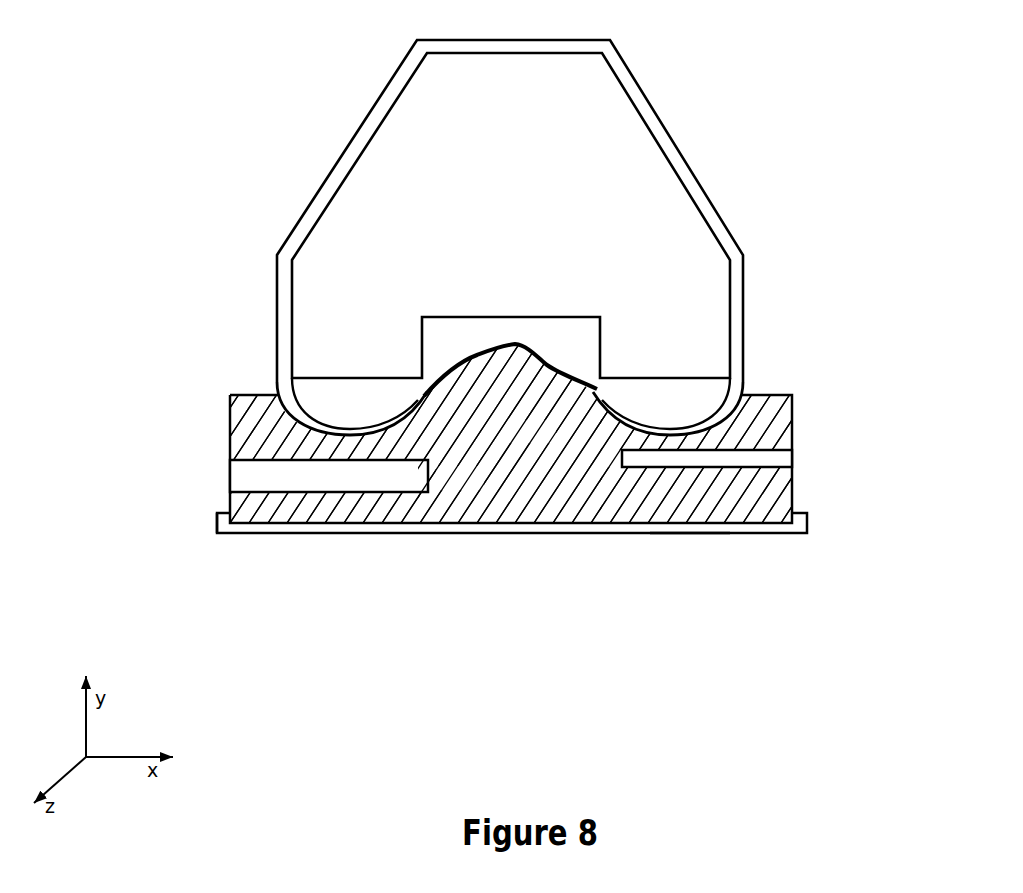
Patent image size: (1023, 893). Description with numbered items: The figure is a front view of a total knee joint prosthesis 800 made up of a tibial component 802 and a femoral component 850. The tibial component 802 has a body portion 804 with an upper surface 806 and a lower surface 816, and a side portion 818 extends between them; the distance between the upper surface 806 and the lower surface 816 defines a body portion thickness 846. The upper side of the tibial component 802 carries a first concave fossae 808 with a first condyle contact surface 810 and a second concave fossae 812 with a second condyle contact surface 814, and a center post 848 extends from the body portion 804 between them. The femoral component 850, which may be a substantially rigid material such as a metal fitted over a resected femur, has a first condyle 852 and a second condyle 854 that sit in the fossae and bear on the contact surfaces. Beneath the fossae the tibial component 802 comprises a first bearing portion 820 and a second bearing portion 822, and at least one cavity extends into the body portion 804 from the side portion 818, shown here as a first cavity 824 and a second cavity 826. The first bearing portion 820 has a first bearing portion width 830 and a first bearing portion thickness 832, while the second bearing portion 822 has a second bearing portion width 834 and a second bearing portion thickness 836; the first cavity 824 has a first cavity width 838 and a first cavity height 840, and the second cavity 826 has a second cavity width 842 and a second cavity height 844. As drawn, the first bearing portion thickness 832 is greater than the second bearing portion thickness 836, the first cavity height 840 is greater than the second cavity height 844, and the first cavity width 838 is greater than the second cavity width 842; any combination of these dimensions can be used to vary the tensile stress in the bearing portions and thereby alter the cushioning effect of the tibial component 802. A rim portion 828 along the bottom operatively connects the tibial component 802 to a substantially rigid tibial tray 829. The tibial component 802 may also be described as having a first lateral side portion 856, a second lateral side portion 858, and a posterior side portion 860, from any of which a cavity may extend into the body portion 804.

The total knee joint prosthesis 800 is at (797, 111).
The tibial component 802 is at (795, 366).
The body portion 804 is at (480, 382).
The upper surface 806 is at (245, 395).
The first concave fossae 808 is at (265, 365).
The first condyle contact surface 810 is at (385, 428).
The second concave fossae 812 is at (752, 372).
The second condyle contact surface 814 is at (663, 430).
The lower surface 816 is at (783, 534).
The side portion 818 is at (795, 405).
The first bearing portion 820 is at (340, 447).
The second bearing portion 822 is at (693, 440).
The first cavity 824 is at (283, 478).
The second cavity 826 is at (640, 463).
The rim portion 828 is at (217, 516).
The tibial tray 829 is at (690, 528).
The first bearing portion width 830 is at (419, 682).
The first bearing portion thickness 832 is at (217, 460).
The second bearing portion width 834 is at (747, 677).
The second bearing portion thickness 836 is at (868, 413).
The first cavity width 838 is at (427, 750).
The first cavity height 840 is at (458, 438).
The second cavity width 842 is at (792, 750).
The second cavity height 844 is at (583, 468).
The body portion thickness 846 is at (900, 395).
The center post 848 is at (517, 345).
The femoral component 850 is at (345, 142).
The first condyle 852 is at (348, 393).
The second condyle 854 is at (680, 397).
The first lateral side portion 856 is at (228, 430).
The second lateral side portion 858 is at (795, 500).
The posterior side portion 860 is at (500, 505).